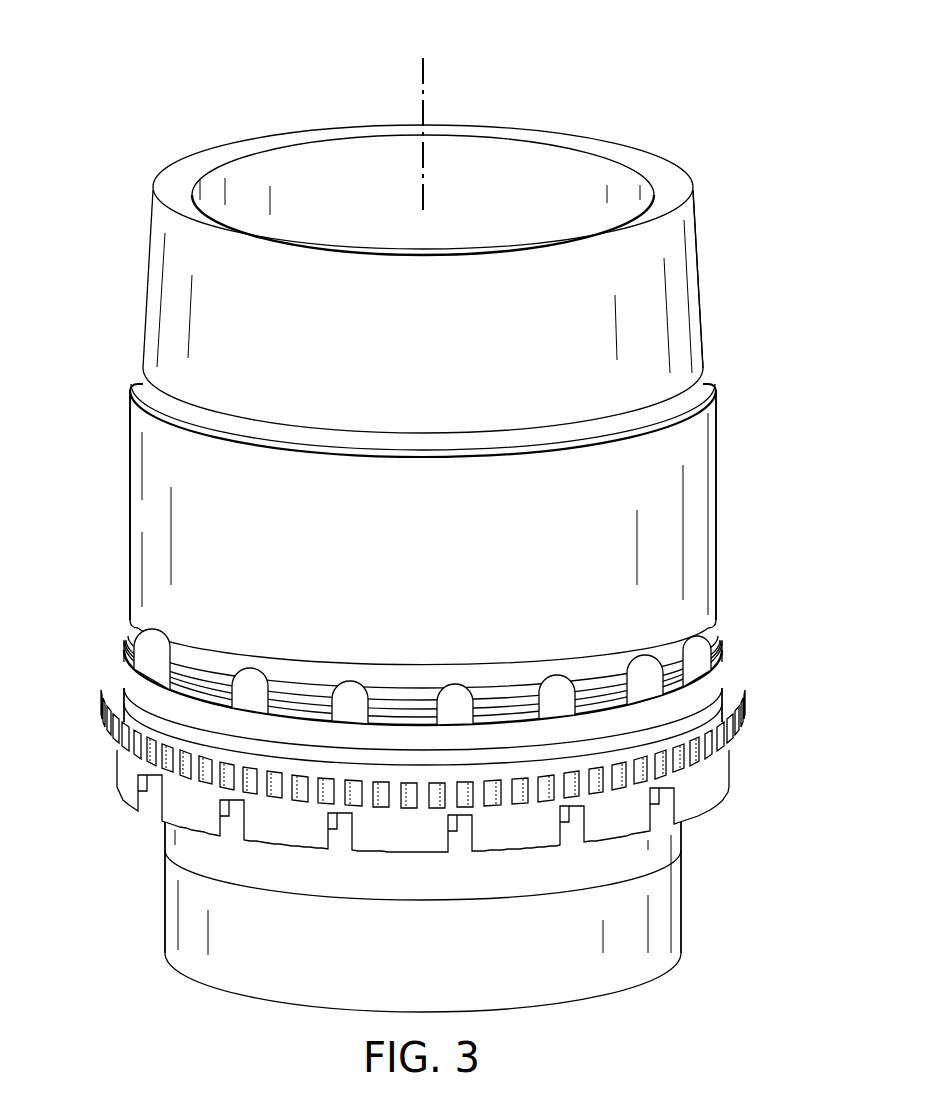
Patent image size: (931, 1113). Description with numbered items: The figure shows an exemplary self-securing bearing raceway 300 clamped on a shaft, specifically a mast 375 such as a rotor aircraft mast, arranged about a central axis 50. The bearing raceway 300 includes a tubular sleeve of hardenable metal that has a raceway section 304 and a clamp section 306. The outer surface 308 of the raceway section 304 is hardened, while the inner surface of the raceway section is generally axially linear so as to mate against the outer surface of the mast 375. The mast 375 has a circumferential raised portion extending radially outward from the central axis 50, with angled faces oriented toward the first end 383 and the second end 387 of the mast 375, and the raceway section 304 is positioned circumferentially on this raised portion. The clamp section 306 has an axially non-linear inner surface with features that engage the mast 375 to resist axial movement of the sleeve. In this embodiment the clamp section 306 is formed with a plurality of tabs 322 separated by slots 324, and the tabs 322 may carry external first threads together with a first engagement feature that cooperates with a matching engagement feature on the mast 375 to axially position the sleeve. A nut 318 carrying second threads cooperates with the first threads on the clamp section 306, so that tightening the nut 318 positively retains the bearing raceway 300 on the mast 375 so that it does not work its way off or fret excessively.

The self-securing bearing raceway 300 is at (268, 59).
The central axis 50 is at (421, 64).
The mast 375 is at (151, 277).
The first end of mast 383 is at (694, 208).
The outer surface of raceway section 308 is at (158, 516).
The raceway section 304 is at (754, 385).
The clamp section 306 is at (754, 648).
The tabs 322 is at (218, 680).
The slots 324 is at (326, 700).
The nut 318 is at (693, 798).
The second end of mast 387 is at (240, 975).